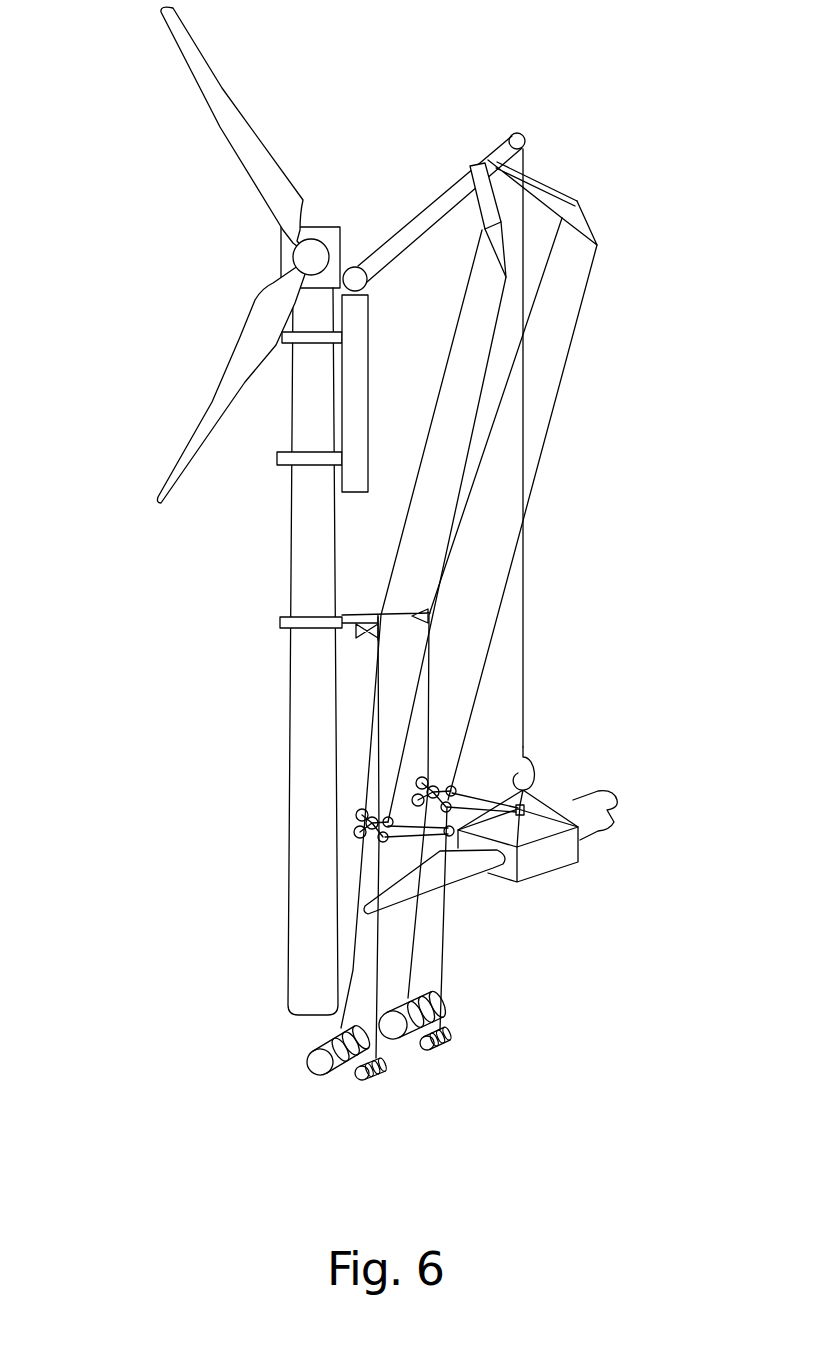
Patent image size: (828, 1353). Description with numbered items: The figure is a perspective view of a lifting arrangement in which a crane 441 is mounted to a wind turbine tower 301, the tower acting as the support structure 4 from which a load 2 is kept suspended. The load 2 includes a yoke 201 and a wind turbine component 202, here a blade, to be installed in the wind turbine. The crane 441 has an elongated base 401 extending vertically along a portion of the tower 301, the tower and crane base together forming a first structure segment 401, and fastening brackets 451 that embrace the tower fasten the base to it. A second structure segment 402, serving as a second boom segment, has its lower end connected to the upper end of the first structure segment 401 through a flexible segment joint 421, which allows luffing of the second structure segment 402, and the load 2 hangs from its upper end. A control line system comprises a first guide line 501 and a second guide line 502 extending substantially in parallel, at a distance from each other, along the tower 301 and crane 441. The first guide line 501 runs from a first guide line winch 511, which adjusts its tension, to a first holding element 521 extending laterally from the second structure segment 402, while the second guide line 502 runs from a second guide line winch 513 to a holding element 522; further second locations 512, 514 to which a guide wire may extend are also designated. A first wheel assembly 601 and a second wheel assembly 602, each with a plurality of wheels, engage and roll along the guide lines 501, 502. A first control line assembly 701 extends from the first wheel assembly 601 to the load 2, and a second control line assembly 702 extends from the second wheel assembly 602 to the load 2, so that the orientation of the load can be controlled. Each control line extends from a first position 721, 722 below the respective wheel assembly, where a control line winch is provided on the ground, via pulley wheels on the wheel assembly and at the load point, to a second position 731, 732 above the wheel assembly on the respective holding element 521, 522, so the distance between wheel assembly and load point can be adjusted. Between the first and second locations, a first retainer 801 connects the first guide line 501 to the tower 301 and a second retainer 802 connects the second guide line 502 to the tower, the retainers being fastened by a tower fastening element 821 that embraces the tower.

The load 2 is at (537, 916).
The support structure 4 is at (194, 621).
The yoke 201 is at (563, 872).
The wind turbine component 202 is at (225, 88).
The wind turbine tower 301 is at (292, 557).
The base 401 is at (368, 318).
The second structure segment 402 is at (427, 193).
The flexible segment joint 421 is at (352, 265).
The crane 441 is at (488, 393).
The fastening bracket 451 is at (278, 461).
The first guide line 501 is at (418, 475).
The second guide line 502 is at (501, 395).
The first guide line winch 511 is at (338, 1073).
The second location 512 is at (483, 231).
The second guide line winch 513 is at (407, 1045).
The second location 514 is at (562, 218).
The first holding element 521 is at (525, 178).
The holding element 522 is at (562, 195).
The first wheel assembly 601 is at (360, 813).
The second wheel assembly 602 is at (420, 783).
The first control line assembly 701 is at (398, 836).
The second control line assembly 702 is at (457, 792).
The first position 721 is at (376, 1082).
The first position 722 is at (443, 1052).
The second position 731 is at (506, 277).
The second position 732 is at (600, 243).
The first retainer 801 is at (347, 632).
The second retainer 802 is at (354, 614).
The tower fastening element 821 is at (280, 620).